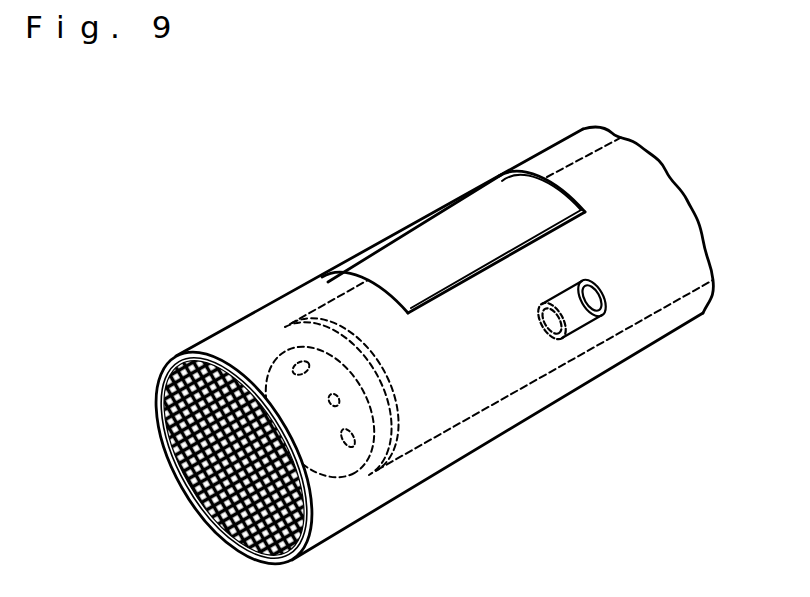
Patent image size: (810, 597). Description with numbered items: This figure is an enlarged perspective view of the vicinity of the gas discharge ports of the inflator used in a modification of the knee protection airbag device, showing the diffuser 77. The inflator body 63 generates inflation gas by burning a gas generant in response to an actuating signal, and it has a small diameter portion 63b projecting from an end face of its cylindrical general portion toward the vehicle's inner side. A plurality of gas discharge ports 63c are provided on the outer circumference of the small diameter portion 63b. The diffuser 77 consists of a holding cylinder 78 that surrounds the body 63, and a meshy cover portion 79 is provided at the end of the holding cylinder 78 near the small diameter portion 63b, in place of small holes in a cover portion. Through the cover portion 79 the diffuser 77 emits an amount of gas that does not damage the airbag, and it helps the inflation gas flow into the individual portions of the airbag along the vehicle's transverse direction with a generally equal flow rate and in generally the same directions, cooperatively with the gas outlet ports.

The diffuser 77 is at (587, 110).
The holding cylinder 78 is at (540, 398).
The meshy cover portion 79 is at (190, 485).
The body 63 is at (444, 230).
The small diameter portion 63b is at (259, 376).
The gas discharge ports 63c is at (346, 405).